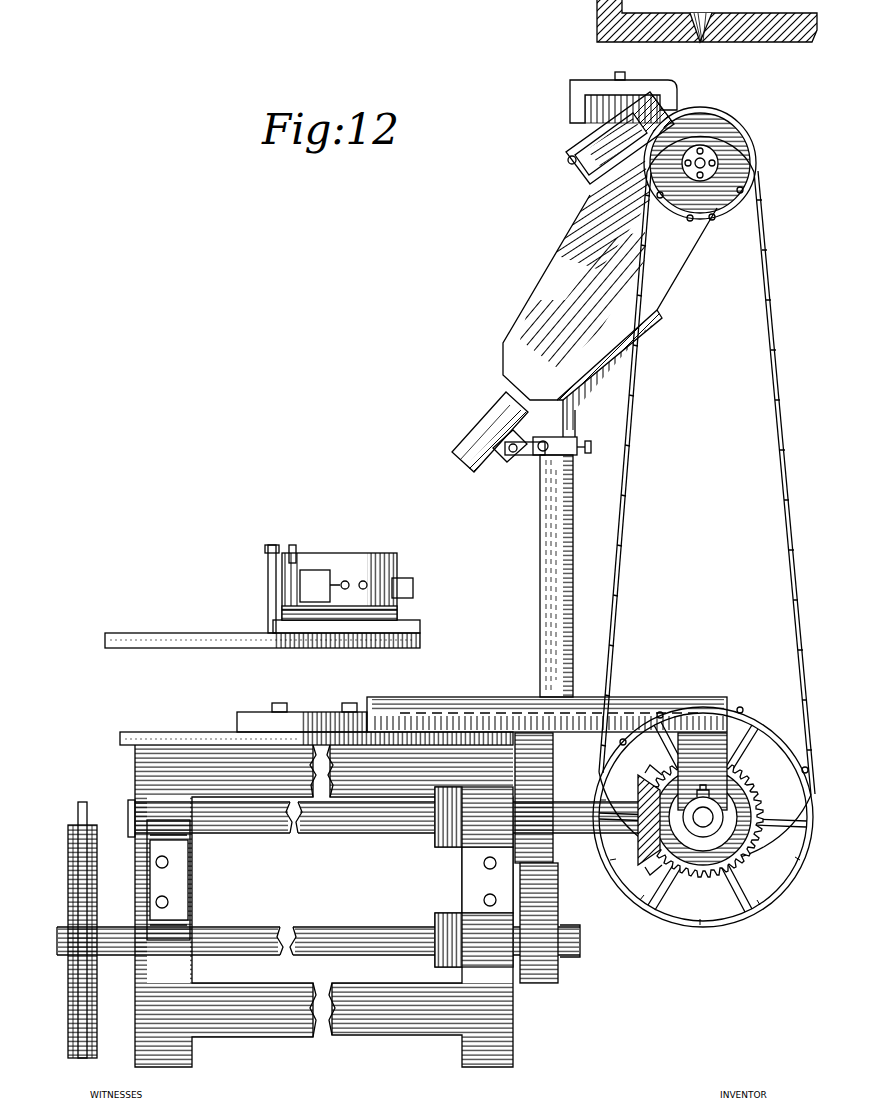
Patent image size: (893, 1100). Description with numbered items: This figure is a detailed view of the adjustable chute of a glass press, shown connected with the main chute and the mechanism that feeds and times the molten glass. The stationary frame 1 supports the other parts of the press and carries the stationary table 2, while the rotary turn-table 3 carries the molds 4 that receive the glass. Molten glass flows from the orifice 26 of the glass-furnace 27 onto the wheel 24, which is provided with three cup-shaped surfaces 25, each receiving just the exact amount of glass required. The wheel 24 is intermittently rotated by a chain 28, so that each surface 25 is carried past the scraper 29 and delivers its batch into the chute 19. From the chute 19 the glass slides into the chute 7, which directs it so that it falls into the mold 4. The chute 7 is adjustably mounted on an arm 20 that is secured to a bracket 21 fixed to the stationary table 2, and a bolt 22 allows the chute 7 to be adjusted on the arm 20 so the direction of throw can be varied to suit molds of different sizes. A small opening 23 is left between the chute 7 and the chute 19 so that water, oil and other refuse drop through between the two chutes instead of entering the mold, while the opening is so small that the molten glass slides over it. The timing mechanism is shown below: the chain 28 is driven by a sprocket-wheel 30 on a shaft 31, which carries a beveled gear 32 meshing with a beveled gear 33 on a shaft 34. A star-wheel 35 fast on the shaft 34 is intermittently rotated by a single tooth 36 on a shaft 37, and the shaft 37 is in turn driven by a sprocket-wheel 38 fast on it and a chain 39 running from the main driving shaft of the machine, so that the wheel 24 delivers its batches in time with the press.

The stationary frame 1 is at (258, 1028).
The stationary table 2 is at (165, 732).
The rotary turn-table 3 is at (170, 633).
The mold 4 is at (352, 560).
The chute 7 is at (478, 436).
The chute 19 is at (615, 278).
The arm 20 is at (542, 460).
The bracket 21 is at (573, 525).
The bolt 22 is at (503, 466).
The opening 23 is at (594, 377).
The wheel 24 is at (733, 157).
The surfaces 25 is at (723, 128).
The orifice 26 is at (706, 44).
The glass-furnace 27 is at (597, 14).
The chain 28 is at (790, 505).
The scraper 29 is at (665, 116).
The sprocket-wheel 30 is at (775, 896).
The shaft 31 is at (706, 830).
The beveled gear 32 is at (688, 878).
The beveled gear 33 is at (648, 885).
The shaft 34 is at (592, 838).
The star-wheel 35 is at (545, 760).
The single tooth 36 is at (545, 978).
The shaft 37 is at (355, 937).
The sprocket-wheel 38 is at (92, 878).
The chain 39 is at (84, 825).